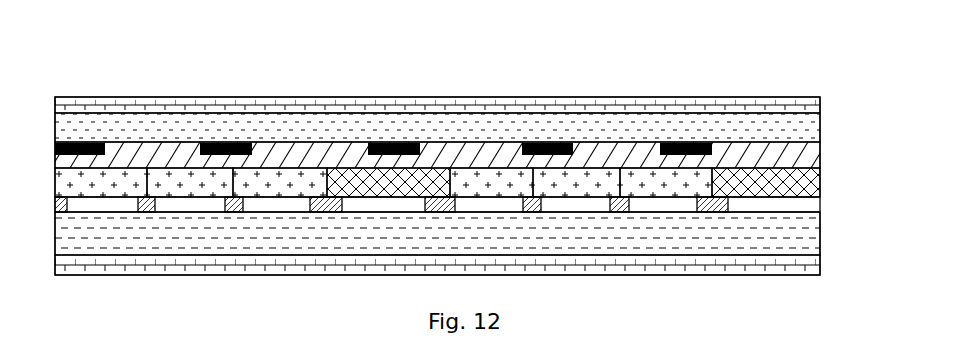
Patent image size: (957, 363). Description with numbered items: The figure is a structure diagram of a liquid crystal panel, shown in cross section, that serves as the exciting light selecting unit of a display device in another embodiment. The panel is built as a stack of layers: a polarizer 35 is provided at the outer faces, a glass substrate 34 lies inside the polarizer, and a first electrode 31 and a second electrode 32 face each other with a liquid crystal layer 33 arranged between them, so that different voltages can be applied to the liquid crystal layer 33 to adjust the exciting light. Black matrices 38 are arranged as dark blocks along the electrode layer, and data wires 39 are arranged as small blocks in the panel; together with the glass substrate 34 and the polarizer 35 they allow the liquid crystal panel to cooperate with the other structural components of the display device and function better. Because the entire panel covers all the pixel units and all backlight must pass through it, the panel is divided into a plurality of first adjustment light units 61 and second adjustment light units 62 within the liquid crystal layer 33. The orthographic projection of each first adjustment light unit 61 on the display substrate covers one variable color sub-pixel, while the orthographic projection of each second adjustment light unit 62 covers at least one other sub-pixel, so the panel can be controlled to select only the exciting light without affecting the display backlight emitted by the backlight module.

The first electrode 31 is at (346, 145).
The second electrode 32 is at (187, 207).
The liquid crystal layer 33 is at (820, 180).
The glass substrate 34 is at (263, 237).
The polarizer 35 is at (455, 253).
The black matrices 38 is at (552, 140).
The data wires 39 is at (65, 195).
The first adjustment light unit 61 is at (765, 182).
The second adjustment light unit 62 is at (661, 182).